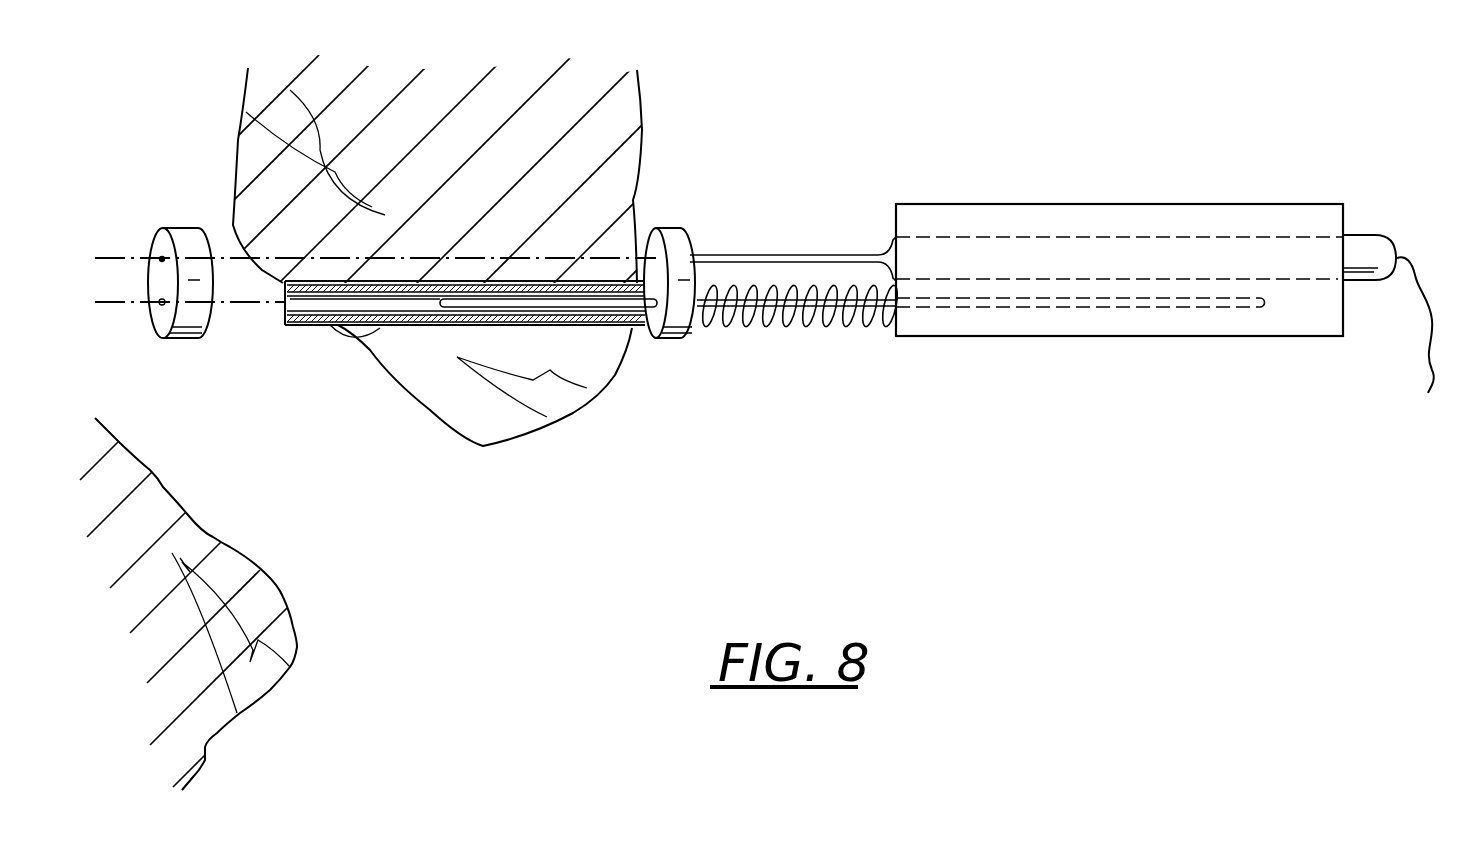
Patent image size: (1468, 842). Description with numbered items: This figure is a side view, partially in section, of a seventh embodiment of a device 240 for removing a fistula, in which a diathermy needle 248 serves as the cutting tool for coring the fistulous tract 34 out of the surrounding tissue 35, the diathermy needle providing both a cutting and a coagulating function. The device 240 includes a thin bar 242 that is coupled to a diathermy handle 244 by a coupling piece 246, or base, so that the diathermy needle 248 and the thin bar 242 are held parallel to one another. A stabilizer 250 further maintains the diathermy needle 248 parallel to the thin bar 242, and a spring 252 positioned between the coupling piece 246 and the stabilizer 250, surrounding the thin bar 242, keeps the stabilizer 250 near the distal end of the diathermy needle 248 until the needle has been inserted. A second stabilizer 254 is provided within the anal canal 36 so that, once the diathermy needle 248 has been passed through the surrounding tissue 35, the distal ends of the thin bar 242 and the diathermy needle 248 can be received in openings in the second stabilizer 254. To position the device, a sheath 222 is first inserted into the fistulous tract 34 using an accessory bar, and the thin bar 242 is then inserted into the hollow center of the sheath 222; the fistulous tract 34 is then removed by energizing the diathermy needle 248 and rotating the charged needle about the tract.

The device 240 is at (907, 100).
The thin bar 242 is at (958, 308).
The diathermy handle 244 is at (1048, 248).
The coupling piece 246 is at (1153, 316).
The diathermy needle 248 is at (795, 255).
The stabilizer 250 is at (684, 337).
The spring 252 is at (790, 326).
The second stabilizer 254 is at (184, 234).
The sheath 222 is at (377, 328).
The fistulous tract 34 is at (583, 325).
The surrounding tissue 35 is at (505, 183).
The anal canal 36 is at (303, 451).